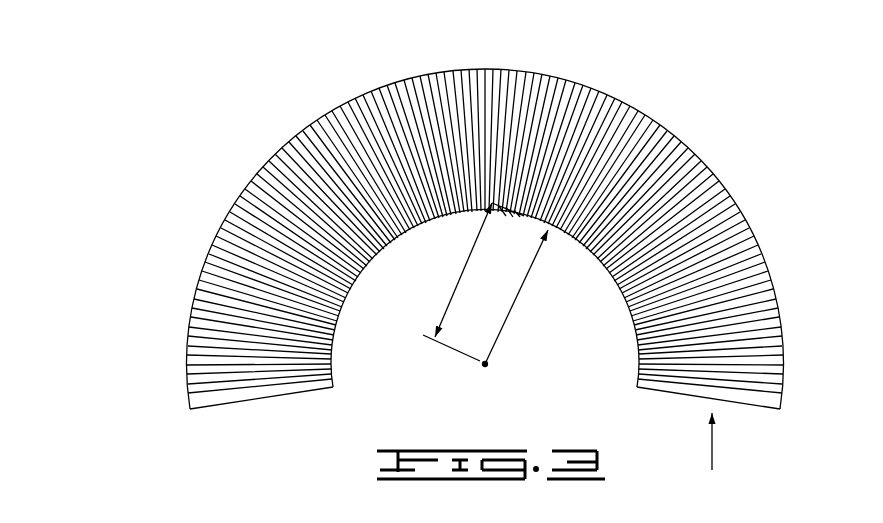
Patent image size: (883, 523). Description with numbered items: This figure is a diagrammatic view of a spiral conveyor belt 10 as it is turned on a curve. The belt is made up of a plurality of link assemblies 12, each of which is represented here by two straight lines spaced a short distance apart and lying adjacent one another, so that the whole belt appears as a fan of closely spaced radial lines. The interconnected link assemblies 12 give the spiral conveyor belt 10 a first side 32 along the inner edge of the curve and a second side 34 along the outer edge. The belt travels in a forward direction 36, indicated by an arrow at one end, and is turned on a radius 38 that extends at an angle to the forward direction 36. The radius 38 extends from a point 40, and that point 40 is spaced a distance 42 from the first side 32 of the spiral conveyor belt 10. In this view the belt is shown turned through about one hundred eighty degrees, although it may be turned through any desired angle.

The spiral conveyor belt 10 is at (707, 142).
The link assembly 12 is at (755, 230).
The first side 32 is at (372, 261).
The second side 34 is at (328, 113).
The forward direction 36 is at (712, 447).
The radius 38 is at (505, 318).
The point 40 is at (486, 366).
The distance 42 is at (468, 252).